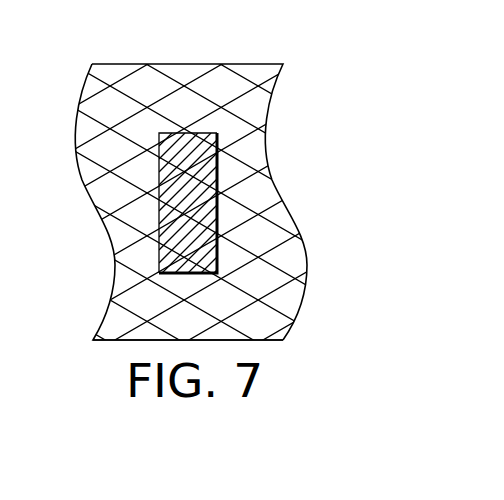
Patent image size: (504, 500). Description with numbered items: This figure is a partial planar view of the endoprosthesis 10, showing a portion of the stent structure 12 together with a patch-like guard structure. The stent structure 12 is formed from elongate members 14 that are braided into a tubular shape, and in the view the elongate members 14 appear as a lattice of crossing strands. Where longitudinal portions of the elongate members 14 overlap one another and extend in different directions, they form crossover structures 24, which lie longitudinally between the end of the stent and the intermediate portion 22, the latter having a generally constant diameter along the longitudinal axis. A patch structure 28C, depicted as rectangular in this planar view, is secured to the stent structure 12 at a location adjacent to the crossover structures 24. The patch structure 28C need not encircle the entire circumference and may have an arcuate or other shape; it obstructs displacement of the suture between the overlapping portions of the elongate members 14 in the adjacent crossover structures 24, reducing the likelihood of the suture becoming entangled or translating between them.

The endoprosthesis 10 is at (240, 63).
The stent structure 12 is at (115, 268).
The elongate members 14 is at (237, 198).
The intermediate portion 22 is at (101, 214).
The crossover structures 24 is at (265, 301).
The patch structure 28C is at (242, 143).